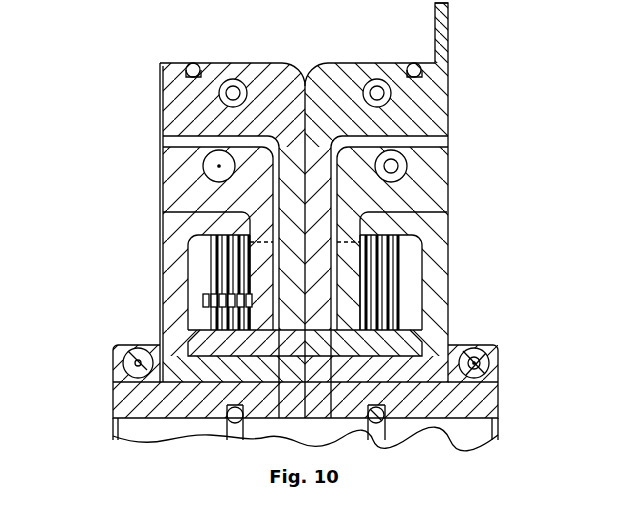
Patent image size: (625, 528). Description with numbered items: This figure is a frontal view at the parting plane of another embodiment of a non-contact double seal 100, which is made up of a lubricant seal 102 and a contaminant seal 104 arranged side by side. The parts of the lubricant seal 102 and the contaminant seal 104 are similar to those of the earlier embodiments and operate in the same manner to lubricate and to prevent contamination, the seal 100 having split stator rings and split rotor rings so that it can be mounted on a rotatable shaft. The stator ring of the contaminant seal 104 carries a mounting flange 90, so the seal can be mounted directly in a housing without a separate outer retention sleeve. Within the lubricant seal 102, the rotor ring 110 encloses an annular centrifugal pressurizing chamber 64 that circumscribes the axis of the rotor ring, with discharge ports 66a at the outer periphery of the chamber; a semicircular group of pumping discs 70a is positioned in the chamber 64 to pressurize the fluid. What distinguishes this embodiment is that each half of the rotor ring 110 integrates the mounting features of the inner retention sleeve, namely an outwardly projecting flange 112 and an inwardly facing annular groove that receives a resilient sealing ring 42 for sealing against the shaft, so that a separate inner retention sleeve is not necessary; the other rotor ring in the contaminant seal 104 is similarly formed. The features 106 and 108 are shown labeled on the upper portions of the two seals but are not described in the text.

The non-contact double seal 100 is at (143, 64).
The lubricant seal 102 is at (159, 104).
The contaminant seal 104 is at (451, 93).
The first housing fastener bore 106 is at (243, 63).
The second housing fastener bore 108 is at (360, 70).
The mounting flange 90 is at (442, 30).
The rotor ring 110 is at (162, 243).
The annular centrifugal pressurizing chamber 64 is at (202, 268).
The discharge ports 66a is at (255, 242).
The pumping discs 70a is at (222, 315).
The outwardly projecting flange 112 is at (128, 351).
The resilient sealing ring 42 is at (237, 420).